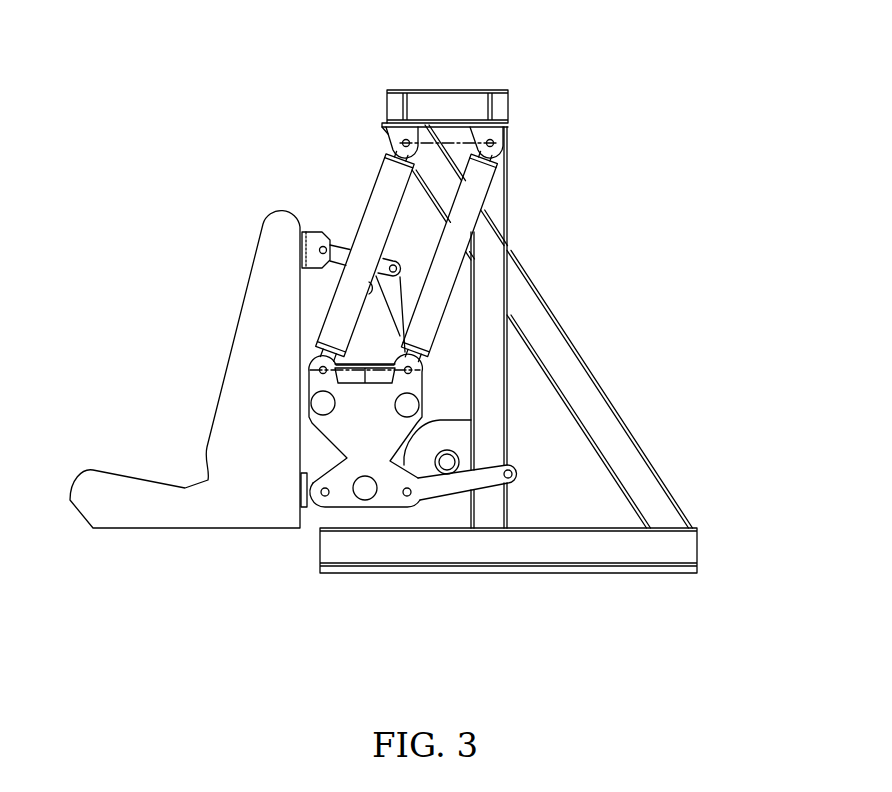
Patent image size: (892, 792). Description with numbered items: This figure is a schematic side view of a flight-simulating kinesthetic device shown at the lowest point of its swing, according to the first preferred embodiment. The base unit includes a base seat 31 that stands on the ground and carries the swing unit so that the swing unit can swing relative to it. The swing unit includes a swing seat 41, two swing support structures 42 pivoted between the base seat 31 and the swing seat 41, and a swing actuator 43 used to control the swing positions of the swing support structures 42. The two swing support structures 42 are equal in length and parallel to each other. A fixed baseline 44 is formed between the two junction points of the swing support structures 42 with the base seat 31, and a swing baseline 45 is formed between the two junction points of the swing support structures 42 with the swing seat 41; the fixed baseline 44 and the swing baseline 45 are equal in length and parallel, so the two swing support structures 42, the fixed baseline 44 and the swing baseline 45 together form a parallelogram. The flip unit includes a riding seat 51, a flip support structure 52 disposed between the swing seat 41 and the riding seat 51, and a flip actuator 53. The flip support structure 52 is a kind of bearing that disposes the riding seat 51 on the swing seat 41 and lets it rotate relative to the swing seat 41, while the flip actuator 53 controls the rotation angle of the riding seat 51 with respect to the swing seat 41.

The base seat 31 is at (397, 100).
The swing seat 41 is at (337, 495).
The swing support structures 42 is at (388, 177).
The swing actuator 43 is at (455, 437).
The fixed baseline 44 is at (454, 142).
The swing baseline 45 is at (365, 372).
The riding seat 51 is at (267, 317).
The flip support structure 52 is at (302, 488).
The flip actuator 53 is at (342, 250).